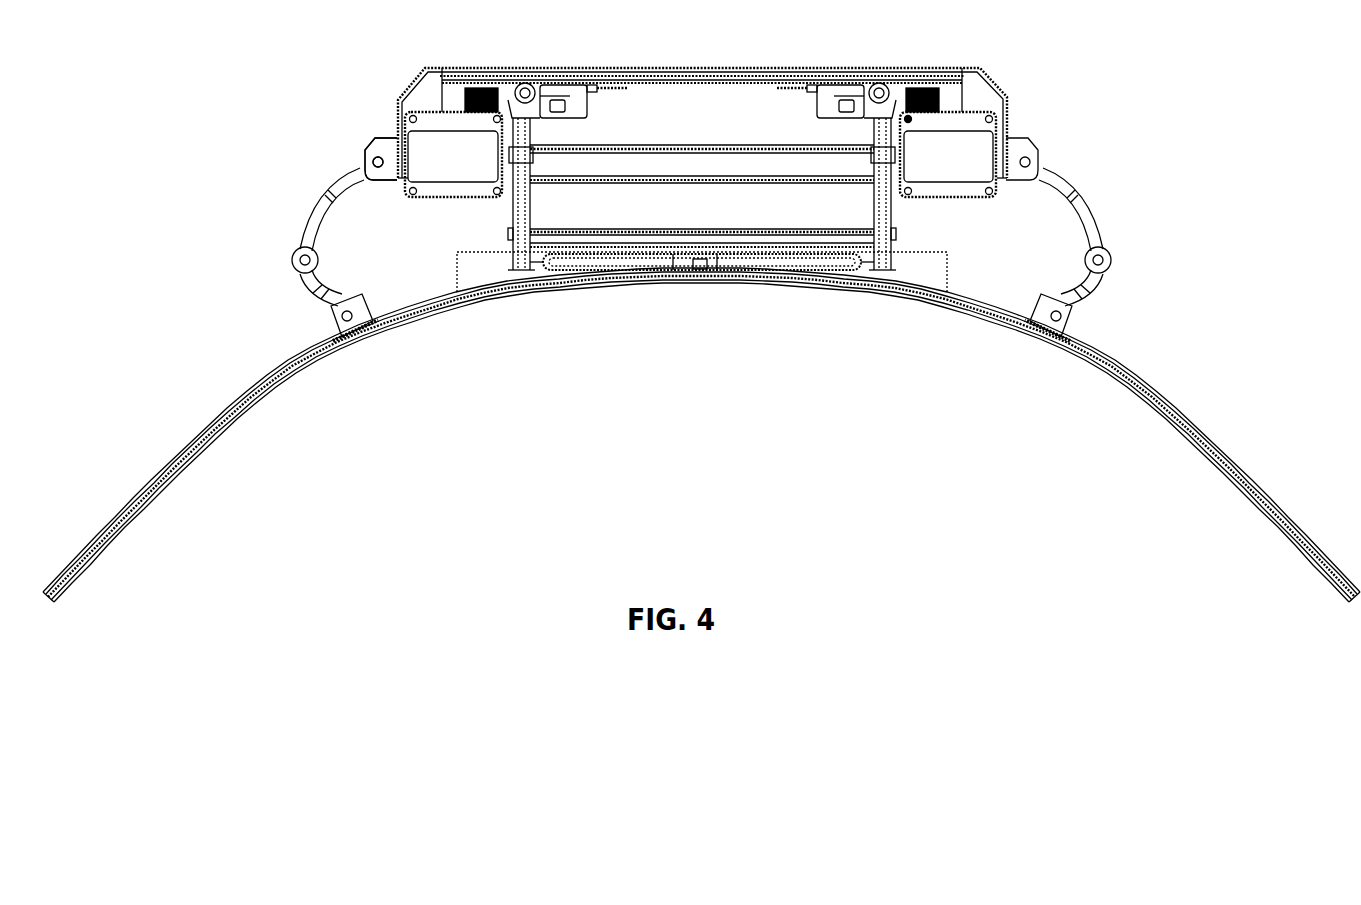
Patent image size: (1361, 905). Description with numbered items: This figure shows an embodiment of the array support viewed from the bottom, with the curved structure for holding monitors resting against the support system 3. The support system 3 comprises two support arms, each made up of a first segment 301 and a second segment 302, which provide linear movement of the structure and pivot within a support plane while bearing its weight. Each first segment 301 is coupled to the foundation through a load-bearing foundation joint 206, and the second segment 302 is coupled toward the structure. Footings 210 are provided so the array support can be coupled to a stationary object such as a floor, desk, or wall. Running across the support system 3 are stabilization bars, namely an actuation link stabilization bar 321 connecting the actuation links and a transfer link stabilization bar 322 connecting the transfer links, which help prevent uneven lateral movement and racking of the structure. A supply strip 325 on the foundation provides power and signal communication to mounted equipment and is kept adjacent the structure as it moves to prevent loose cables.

The support system 3 is at (1134, 72).
The foundation joint 206 is at (1030, 162).
The footing 210 is at (437, 157).
The first segment 301 is at (326, 196).
The second segment 302 is at (310, 296).
The actuation link stabilization bar 321 is at (800, 140).
The transfer link stabilization bar 322 is at (840, 222).
The supply strip 325 is at (607, 273).